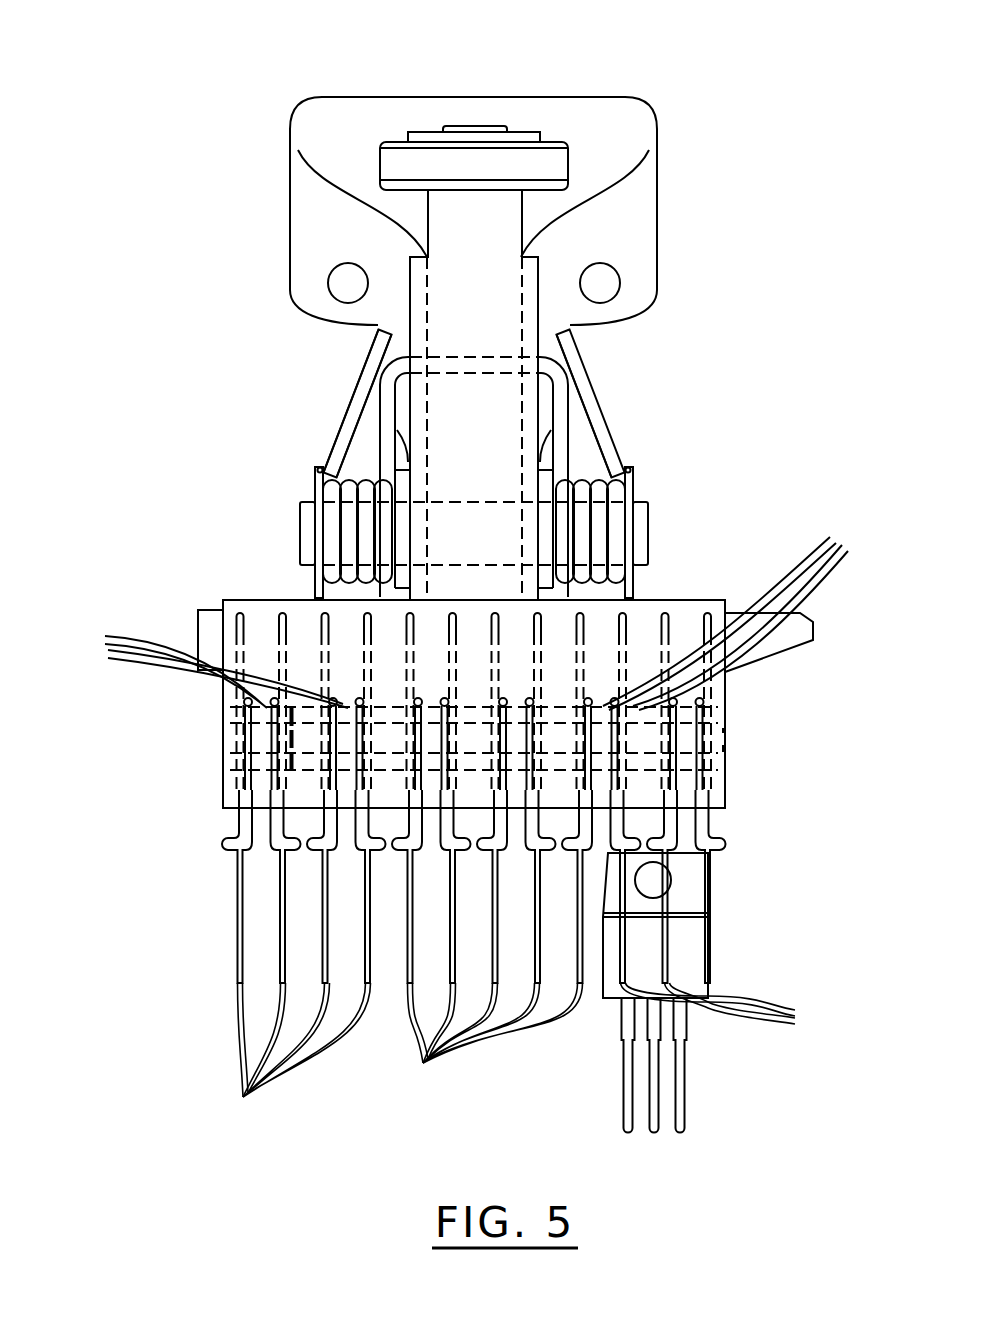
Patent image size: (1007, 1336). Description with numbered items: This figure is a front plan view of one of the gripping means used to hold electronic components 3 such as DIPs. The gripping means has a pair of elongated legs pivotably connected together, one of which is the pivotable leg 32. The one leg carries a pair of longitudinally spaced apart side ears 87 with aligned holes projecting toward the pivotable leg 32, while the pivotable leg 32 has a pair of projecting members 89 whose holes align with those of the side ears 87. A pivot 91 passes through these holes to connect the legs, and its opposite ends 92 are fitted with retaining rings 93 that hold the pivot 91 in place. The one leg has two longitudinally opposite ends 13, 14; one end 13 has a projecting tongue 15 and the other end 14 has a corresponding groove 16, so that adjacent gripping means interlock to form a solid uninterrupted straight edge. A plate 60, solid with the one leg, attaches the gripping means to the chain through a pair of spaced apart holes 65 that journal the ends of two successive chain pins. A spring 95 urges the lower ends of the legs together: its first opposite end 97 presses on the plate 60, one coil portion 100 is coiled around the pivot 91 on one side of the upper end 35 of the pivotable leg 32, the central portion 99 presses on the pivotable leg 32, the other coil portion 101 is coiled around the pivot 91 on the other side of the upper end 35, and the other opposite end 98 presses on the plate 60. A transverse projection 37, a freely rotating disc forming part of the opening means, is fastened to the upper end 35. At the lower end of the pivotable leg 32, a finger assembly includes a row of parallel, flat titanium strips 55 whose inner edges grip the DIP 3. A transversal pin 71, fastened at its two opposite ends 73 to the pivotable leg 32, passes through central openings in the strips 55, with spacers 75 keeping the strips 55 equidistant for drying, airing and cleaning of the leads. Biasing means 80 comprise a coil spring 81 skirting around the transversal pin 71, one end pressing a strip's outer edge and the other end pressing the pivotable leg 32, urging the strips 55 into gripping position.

The electronic component 3 is at (692, 1034).
The longitudinally opposite end 13 is at (725, 708).
The longitudinally opposite end 14 is at (223, 714).
The tongue 15 is at (778, 640).
The groove 16 is at (205, 620).
The pivotable leg 32 is at (688, 608).
The upper end 35 is at (548, 165).
The transverse projection 37 is at (534, 168).
The strips 55 is at (795, 1016).
The plate 60 is at (347, 97).
The holes 65 is at (348, 283).
The transversal pin 71 is at (224, 754).
The opposite ends 73 is at (725, 747).
The spacers 75 is at (464, 613).
The biasing means 80 is at (745, 845).
The coil spring 81 is at (503, 852).
The side ears 87 is at (540, 487).
The projecting members 89 is at (332, 97).
The pivot 91 is at (288, 545).
The opposite ends 92 is at (308, 504).
The retaining rings 93 is at (323, 467).
The spring 95 is at (372, 402).
The first opposite end 97 is at (380, 468).
The other opposite end 98 is at (555, 425).
The central portion 99 is at (472, 348).
The coil portion 100 is at (350, 442).
The coil portion 101 is at (600, 468).